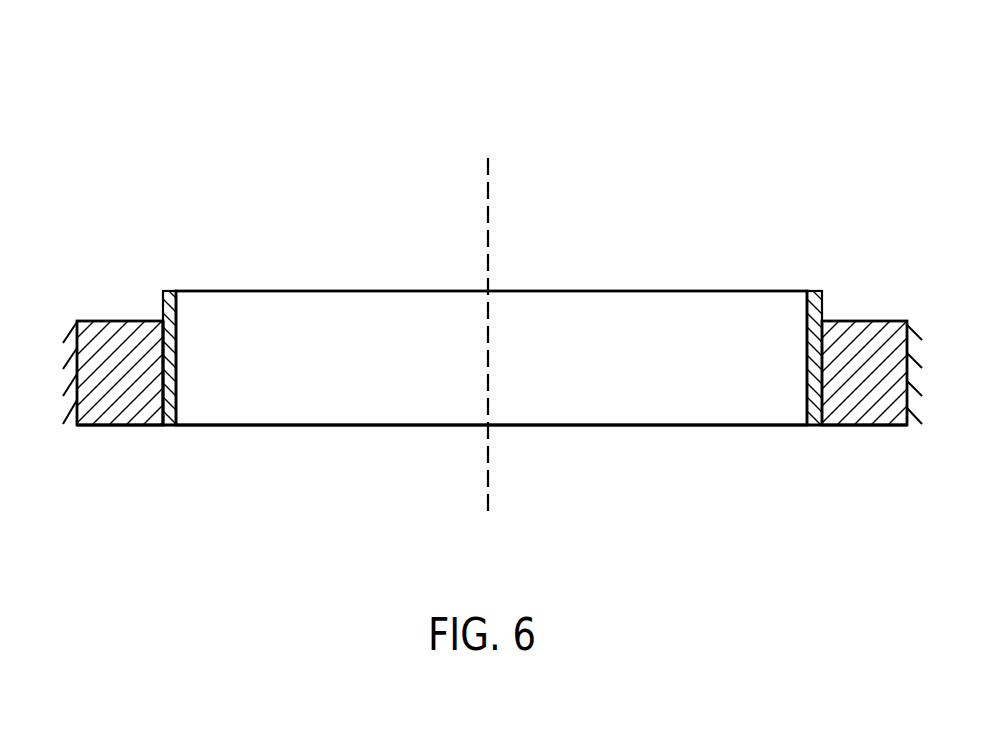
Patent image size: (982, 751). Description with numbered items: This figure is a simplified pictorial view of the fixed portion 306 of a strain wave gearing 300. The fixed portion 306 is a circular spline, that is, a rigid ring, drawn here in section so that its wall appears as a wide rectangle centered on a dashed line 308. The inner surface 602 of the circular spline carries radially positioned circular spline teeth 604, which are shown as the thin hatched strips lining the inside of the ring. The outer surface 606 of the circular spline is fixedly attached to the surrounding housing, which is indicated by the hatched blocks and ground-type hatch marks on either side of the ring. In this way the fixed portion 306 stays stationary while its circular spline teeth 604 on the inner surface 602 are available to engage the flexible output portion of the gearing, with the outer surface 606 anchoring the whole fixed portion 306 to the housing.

The assembly 300 is at (115, 46).
The fixed portion 306 is at (183, 182).
The central axis 308 is at (488, 190).
The inner surface 602 is at (162, 320).
The circular spline teeth 604 is at (165, 290).
The outer surface 606 is at (77, 376).